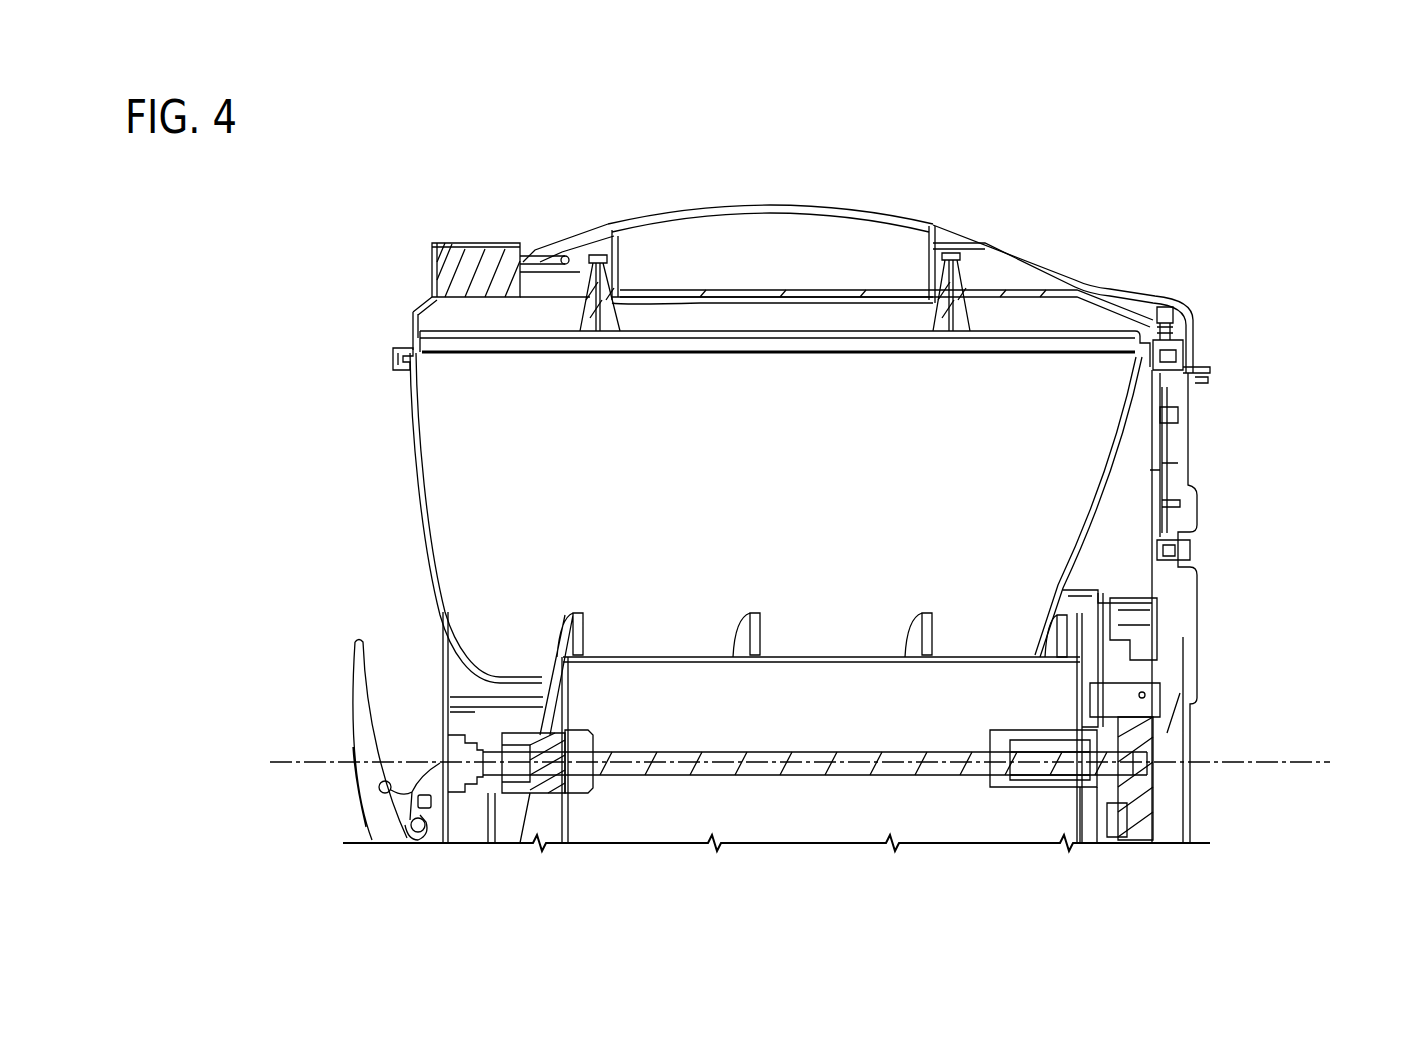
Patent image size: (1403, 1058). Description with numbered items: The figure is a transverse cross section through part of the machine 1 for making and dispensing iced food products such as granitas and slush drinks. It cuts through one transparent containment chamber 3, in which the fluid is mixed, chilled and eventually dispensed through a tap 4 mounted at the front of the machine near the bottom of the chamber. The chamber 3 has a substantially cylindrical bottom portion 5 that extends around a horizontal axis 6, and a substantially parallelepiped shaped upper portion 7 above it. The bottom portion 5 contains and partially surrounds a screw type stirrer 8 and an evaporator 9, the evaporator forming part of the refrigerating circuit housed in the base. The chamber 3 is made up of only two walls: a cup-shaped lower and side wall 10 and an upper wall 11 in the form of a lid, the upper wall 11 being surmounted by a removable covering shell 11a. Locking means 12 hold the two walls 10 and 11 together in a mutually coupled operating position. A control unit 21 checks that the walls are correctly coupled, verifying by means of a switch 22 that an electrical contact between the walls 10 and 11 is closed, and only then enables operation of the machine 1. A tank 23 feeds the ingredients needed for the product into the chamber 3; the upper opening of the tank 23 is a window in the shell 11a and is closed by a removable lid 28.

The machine 1 is at (1243, 208).
The containment chamber 3 is at (400, 512).
The tap 4 is at (370, 797).
The bottom portion 5 is at (445, 672).
The horizontal axis 6 is at (1326, 764).
The upper portion 7 is at (472, 460).
The screw type stirrer 8 is at (925, 626).
The evaporator 9 is at (1025, 695).
The lower and side wall 10 is at (1065, 455).
The upper wall 11 is at (478, 346).
The covering shell 11a is at (1048, 245).
The locking means 12 is at (402, 341).
The control unit 21 is at (487, 262).
The switch 22 is at (1186, 350).
The tank 23 is at (880, 245).
The removable lid 28 is at (773, 208).